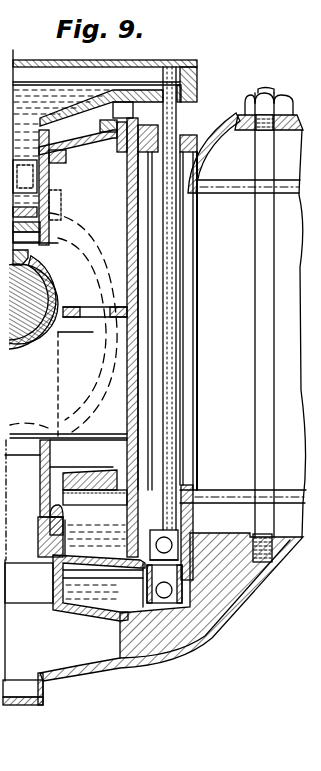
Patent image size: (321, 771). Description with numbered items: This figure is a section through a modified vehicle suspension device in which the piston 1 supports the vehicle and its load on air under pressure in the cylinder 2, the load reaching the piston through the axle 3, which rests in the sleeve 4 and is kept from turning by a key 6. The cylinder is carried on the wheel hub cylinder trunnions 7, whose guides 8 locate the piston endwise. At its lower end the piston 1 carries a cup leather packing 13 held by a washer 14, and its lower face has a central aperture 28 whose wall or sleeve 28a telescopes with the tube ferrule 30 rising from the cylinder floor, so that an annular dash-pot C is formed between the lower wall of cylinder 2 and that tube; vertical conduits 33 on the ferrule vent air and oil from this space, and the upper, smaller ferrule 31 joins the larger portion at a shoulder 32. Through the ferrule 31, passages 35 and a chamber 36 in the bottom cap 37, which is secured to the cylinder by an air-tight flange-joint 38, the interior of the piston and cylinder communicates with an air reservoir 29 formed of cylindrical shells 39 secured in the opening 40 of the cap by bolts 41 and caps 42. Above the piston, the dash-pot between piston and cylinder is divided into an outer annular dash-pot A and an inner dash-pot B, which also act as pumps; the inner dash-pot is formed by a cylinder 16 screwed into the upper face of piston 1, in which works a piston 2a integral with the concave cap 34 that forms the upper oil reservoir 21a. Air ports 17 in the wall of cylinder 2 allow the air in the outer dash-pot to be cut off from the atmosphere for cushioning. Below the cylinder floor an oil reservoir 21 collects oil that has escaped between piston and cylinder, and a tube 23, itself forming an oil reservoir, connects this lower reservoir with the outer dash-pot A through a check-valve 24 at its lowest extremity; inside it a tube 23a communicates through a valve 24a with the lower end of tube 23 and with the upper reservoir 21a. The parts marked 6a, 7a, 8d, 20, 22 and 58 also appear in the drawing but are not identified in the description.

The piston 1 is at (127, 193).
The cylinder 2 is at (127, 225).
The piston 2a is at (50, 163).
The axle 3 is at (40, 298).
The sleeve 4 is at (45, 336).
The key 6 is at (28, 257).
The valve member 6a is at (18, 213).
The wheel hub cylinder trunnions 7 is at (78, 404).
The valve 7a is at (20, 192).
The guides 8 is at (56, 398).
The chamber portion 8d is at (27, 383).
The packing 13 is at (106, 499).
The washer 14 is at (95, 497).
The cylinder 16 is at (50, 181).
The air ports 17 is at (128, 321).
The bolt head 20 is at (172, 541).
The oil reservoir 21 is at (93, 598).
The upper oil reservoir 21a is at (35, 100).
The recess 22 is at (29, 583).
The tube 23 is at (176, 251).
The tube 23a is at (167, 327).
The check-valve 24 is at (122, 600).
The valve 24a is at (178, 525).
The aperture 28 is at (52, 489).
The sleeve 28a is at (88, 465).
The air reservoir 29 is at (243, 325).
The tube ferrule 30 is at (40, 547).
The ferrule 31 is at (40, 459).
The shoulder 32 is at (45, 506).
The vertical conduits 33 is at (44, 529).
The cap 34 is at (114, 99).
The passages 35 is at (198, 630).
The chamber 36 is at (26, 642).
The bottom cap 37 is at (236, 608).
The flange-joint 38 is at (62, 573).
The cylindrical shells 39 is at (197, 343).
The opening 40 is at (232, 522).
The bolts 41 is at (257, 288).
The caps 42 is at (200, 156).
The passage 58 is at (63, 243).
The outer annular dash-pot A is at (123, 110).
The inner dash-pot B is at (50, 199).
The annular dash-pot C is at (40, 519).